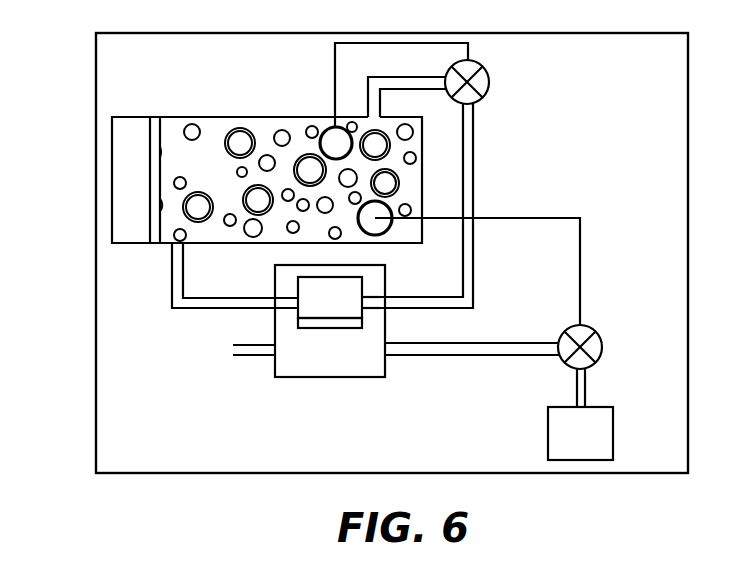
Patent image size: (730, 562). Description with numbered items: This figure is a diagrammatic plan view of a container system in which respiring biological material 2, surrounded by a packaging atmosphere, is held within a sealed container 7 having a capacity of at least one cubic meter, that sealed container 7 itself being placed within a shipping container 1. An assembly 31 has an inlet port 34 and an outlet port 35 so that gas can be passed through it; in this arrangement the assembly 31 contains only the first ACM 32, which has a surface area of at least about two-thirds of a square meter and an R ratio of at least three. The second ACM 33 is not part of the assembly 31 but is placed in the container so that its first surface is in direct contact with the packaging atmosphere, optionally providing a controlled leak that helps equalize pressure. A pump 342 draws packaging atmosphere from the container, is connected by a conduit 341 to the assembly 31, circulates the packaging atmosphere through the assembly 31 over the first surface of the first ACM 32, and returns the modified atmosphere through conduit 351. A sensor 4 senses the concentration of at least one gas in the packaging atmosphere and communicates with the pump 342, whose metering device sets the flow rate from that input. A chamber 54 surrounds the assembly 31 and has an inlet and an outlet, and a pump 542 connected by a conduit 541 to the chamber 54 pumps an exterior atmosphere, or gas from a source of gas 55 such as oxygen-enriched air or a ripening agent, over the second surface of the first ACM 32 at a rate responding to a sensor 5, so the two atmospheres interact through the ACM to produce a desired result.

The shipping container 1 is at (76, 251).
The respiring biological material 2 is at (267, 156).
The sensor 4 is at (324, 132).
The sensor 5 is at (381, 210).
The sealed container 7 is at (293, 184).
The assembly 31 is at (346, 312).
The first ACM 32 is at (313, 330).
The second ACM 33 is at (180, 177).
The inlet port 34 is at (356, 311).
The outlet port 35 is at (298, 292).
The chamber 54 is at (328, 378).
The source of gas 55 is at (597, 447).
The conduit 341 is at (476, 162).
The pump 342 is at (489, 82).
The conduit 351 is at (190, 311).
The conduit 541 is at (470, 357).
The pump 542 is at (602, 347).